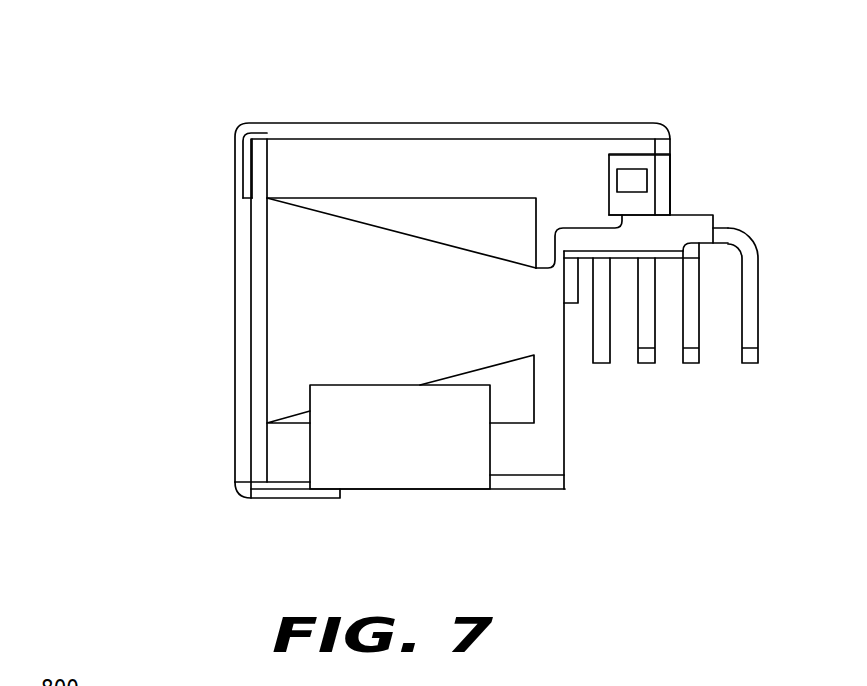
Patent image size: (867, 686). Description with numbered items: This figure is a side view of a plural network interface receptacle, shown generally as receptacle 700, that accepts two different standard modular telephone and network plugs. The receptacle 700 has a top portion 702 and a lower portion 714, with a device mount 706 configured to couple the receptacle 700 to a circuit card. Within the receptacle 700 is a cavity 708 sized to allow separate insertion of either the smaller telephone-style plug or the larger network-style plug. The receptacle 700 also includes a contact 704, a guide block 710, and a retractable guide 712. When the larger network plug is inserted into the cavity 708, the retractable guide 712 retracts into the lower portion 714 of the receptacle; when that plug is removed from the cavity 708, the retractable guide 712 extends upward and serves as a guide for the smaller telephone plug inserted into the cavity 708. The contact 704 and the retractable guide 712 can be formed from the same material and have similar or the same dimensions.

The receptacle 700 is at (128, 63).
The top portion 702 is at (296, 123).
The contact 704 is at (466, 213).
The device mount 706 is at (785, 292).
The cavity 708 is at (282, 253).
The guide block 710 is at (400, 473).
The retractable guide 712 is at (519, 392).
The lower portion 714 is at (548, 455).